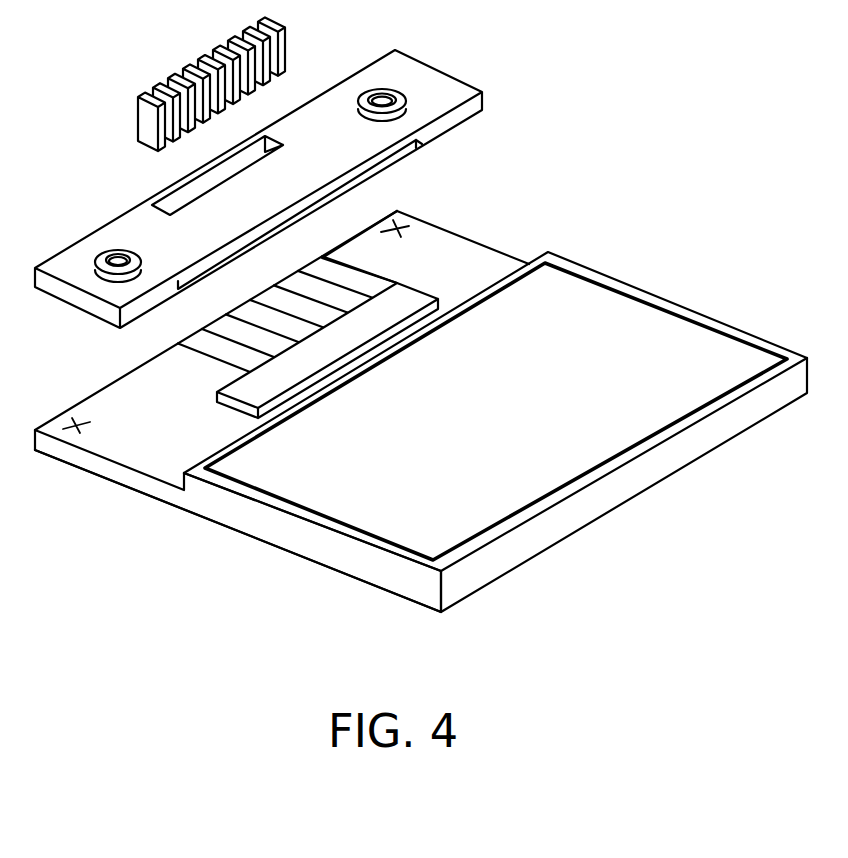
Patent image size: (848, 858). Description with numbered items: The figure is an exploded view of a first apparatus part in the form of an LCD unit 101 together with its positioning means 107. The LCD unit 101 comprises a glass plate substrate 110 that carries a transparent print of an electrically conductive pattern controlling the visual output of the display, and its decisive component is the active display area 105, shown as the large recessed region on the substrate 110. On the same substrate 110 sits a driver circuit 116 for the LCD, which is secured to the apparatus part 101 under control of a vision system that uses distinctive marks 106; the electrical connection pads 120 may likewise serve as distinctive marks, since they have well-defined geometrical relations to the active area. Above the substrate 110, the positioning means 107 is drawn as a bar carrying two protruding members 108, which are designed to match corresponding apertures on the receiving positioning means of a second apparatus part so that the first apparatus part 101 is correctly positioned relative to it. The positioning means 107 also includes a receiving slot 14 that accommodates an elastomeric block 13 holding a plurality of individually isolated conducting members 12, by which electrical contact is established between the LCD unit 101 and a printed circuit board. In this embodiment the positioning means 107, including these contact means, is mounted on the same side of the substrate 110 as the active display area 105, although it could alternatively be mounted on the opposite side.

The LCD unit 101 is at (648, 492).
The glass plate substrate 110 is at (257, 527).
The active display area 105 is at (637, 328).
The distinctive marks 106 is at (405, 222).
The pads 120 is at (182, 358).
The driver circuit 116 is at (400, 306).
The positioning means 107 is at (103, 224).
The receiving slot 14 is at (177, 198).
The protruding members 108 is at (400, 93).
The conducting members 12 is at (186, 84).
The elastomeric block 13 is at (137, 120).